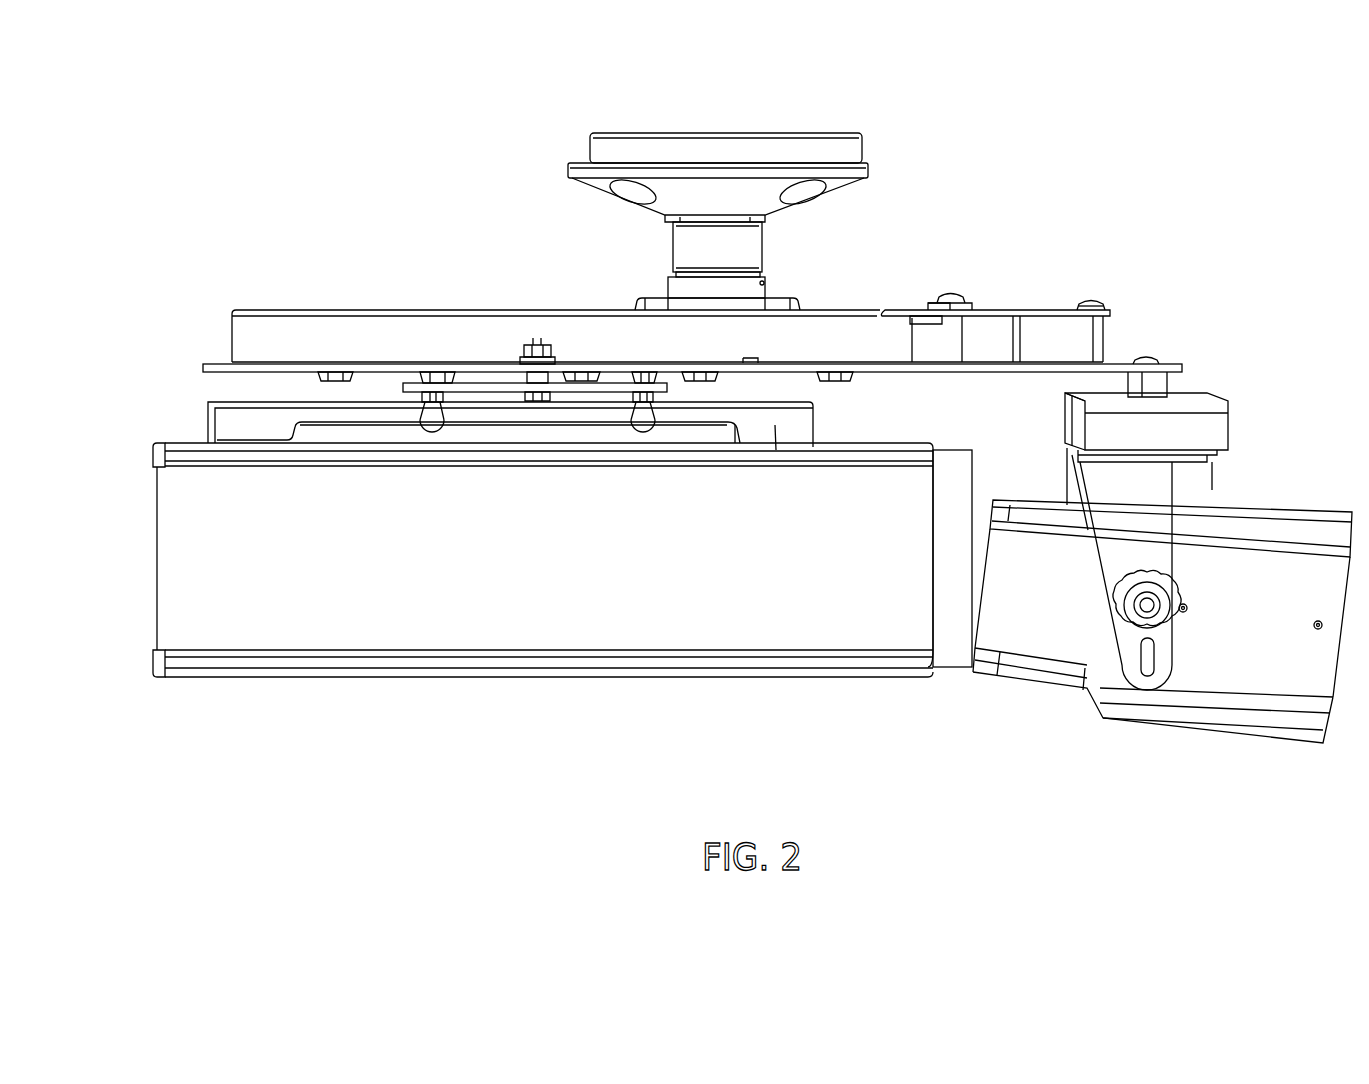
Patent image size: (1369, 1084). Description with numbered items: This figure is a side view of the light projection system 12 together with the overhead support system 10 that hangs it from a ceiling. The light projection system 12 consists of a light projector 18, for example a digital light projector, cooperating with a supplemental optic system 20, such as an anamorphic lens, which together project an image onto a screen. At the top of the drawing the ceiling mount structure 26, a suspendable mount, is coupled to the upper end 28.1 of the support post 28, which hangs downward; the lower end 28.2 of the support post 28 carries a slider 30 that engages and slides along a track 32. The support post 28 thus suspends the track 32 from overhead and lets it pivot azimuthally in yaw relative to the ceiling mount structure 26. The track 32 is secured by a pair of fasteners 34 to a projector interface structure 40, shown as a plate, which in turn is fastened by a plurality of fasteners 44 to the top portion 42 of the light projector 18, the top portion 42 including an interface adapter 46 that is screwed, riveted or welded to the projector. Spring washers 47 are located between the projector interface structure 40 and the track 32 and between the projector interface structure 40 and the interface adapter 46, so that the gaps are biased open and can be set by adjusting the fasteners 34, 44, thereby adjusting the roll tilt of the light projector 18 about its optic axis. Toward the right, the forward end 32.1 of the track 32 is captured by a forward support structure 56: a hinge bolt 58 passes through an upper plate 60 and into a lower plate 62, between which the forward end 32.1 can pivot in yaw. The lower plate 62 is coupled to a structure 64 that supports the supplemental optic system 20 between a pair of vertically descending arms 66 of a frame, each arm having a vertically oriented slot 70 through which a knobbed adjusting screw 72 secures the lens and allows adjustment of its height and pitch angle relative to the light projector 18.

The overhead support system 10 is at (340, 187).
The light projection system 12 is at (283, 710).
The light projector 18 is at (153, 621).
The supplemental optic system 20 is at (1240, 737).
The ceiling mount structure 26 is at (865, 158).
The support post 28 is at (765, 247).
The upper end of the support post 28.1 is at (650, 227).
The lower end of the support post 28.2 is at (661, 279).
The slider 30 is at (775, 300).
The track 32 is at (248, 336).
The forward end of the track 32.1 is at (955, 345).
The fasteners 34 is at (525, 348).
The projector interface structure 40 is at (490, 392).
The top portion of the light projector 42 is at (838, 428).
The fasteners 44 is at (425, 402).
The interface adapter 46 is at (778, 460).
The spring washers 47 is at (635, 402).
The forward support structure 56 is at (1103, 292).
The hinge bolt 58 is at (958, 295).
The upper plate 60 is at (1111, 313).
The lower plate 62 is at (1183, 368).
The structure 64 is at (1232, 425).
The vertically descending arms 66 is at (1148, 508).
The vertically oriented slot 70 is at (1145, 662).
The knobbed adjusting screw 72 is at (1185, 600).